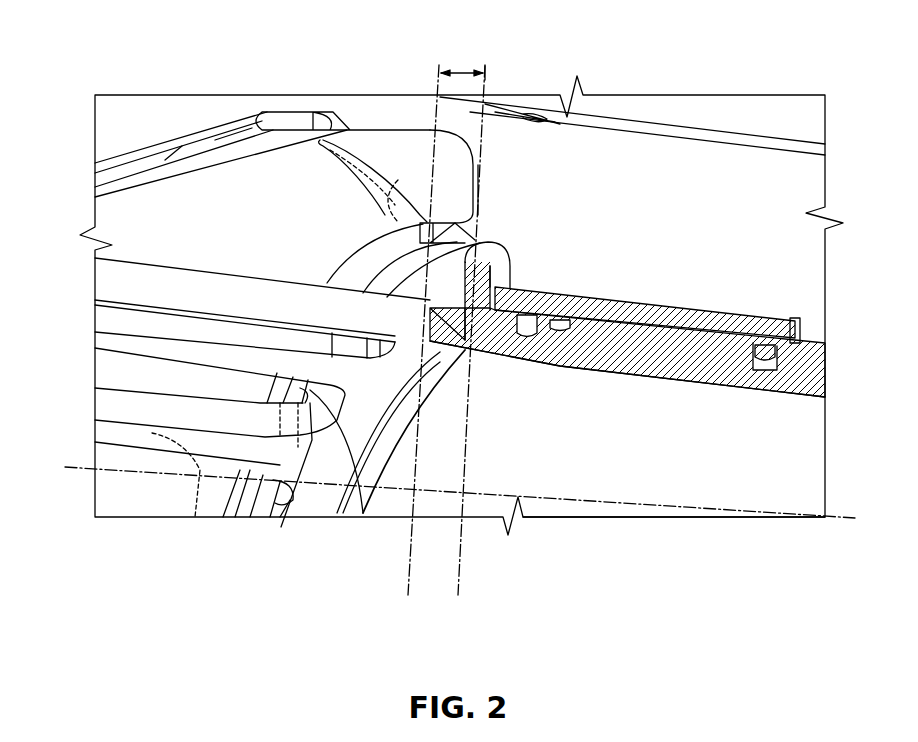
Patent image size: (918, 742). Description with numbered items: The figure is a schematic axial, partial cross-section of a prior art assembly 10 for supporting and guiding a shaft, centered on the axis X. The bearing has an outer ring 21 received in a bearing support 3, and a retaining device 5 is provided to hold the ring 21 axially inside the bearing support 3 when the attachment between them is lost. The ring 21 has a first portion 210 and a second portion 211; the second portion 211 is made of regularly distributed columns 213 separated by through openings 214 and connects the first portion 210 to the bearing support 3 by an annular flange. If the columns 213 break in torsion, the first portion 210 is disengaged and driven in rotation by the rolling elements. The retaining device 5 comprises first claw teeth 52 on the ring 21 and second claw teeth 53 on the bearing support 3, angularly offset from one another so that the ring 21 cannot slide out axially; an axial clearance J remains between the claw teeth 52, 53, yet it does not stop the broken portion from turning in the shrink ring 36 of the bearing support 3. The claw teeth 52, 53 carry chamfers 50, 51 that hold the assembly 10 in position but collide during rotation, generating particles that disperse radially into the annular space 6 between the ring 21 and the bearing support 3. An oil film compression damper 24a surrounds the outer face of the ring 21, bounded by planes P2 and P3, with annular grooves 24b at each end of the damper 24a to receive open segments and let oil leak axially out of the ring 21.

The assembly 10 is at (803, 75).
The bearing support 3 is at (807, 188).
The shrink ring 36 is at (775, 326).
The annular space 6 is at (722, 338).
The oil film compression damper 24a is at (683, 380).
The annular grooves 24b is at (777, 356).
The first portion 210 is at (803, 425).
The ring 21 is at (803, 458).
The second portion 211 is at (115, 290).
The columns 213 is at (140, 448).
The openings 214 is at (152, 433).
The chamfer 50 is at (281, 527).
The chamfer 51 is at (327, 400).
The first claw teeth 52 is at (492, 345).
The second claw teeth 53 is at (322, 381).
The retaining device 5 is at (520, 607).
The plane P2 is at (490, 82).
The plane P3 is at (438, 83).
The axial clearance J is at (462, 72).
The axis X is at (855, 512).